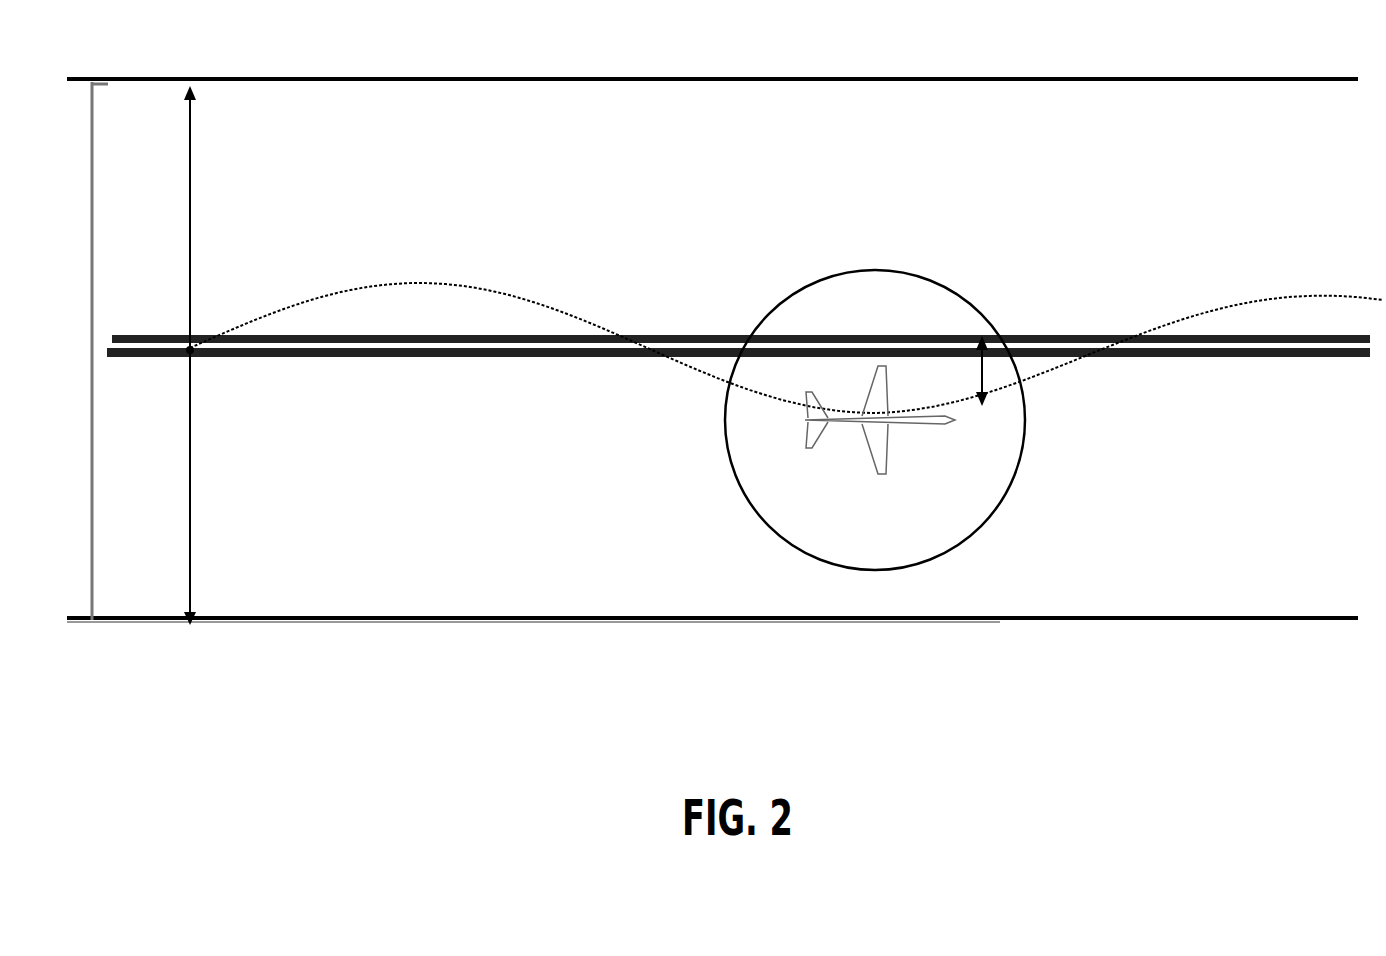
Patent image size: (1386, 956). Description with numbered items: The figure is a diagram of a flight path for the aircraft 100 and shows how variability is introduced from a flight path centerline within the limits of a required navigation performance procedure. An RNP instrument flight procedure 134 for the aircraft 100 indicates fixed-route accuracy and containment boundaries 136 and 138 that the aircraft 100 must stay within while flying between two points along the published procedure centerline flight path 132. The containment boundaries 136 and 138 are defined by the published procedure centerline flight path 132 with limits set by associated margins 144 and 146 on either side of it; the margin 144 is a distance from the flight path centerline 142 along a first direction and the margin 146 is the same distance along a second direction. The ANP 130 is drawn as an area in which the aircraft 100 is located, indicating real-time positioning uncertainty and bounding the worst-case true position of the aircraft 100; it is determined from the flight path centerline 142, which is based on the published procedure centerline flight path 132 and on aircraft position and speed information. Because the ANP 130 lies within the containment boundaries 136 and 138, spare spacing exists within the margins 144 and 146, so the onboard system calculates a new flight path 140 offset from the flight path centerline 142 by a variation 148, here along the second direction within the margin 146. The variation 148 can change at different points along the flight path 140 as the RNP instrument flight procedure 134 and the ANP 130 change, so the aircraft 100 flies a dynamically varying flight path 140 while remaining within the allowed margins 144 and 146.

The aircraft 100 is at (924, 427).
The ANP 130 is at (800, 287).
The published procedure centerline flight path 132 is at (436, 358).
The RNP instrument flight procedure 134 is at (110, 350).
The containment boundary 136 is at (346, 77).
The containment boundary 138 is at (346, 616).
The new flight path 140 is at (428, 281).
The flight path centerline 142 is at (706, 333).
The margin 144 is at (200, 202).
The margin 146 is at (200, 490).
The variation 148 is at (994, 366).